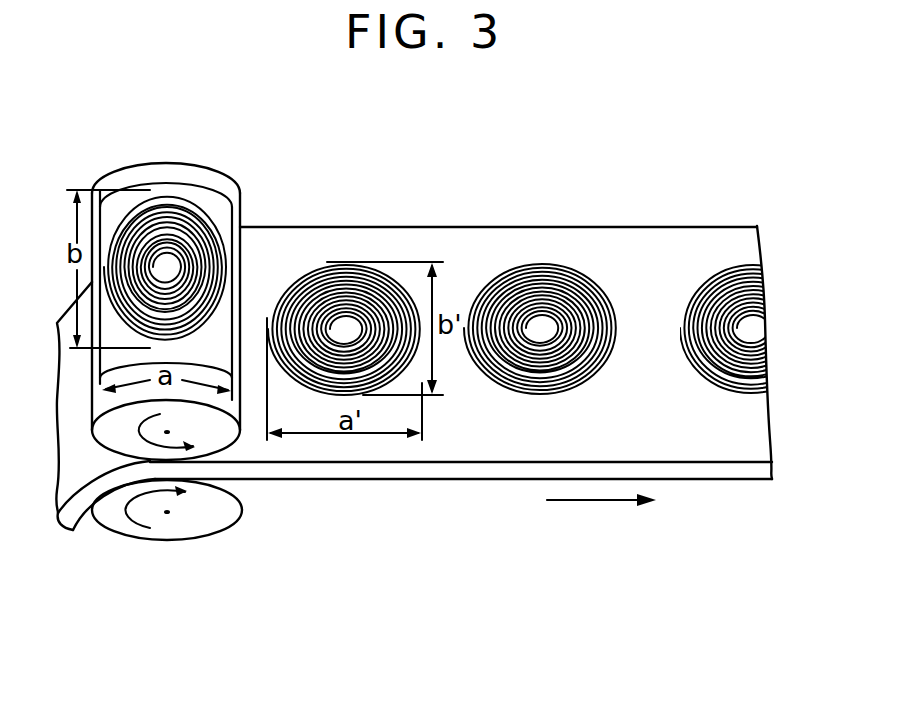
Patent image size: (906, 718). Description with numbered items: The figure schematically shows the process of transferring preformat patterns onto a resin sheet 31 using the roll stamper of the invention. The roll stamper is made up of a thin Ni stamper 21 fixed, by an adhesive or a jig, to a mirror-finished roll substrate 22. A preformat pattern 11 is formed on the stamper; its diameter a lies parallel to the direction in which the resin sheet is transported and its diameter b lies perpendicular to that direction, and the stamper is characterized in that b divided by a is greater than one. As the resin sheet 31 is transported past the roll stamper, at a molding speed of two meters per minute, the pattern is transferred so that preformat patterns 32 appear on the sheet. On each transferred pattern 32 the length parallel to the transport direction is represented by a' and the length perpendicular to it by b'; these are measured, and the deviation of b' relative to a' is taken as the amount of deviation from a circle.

The preformat pattern 11 is at (238, 225).
The Ni stamper 21 is at (212, 201).
The roll substrate 22 is at (202, 167).
The resin sheet 31 is at (407, 480).
The preformat pattern 32 is at (592, 277).